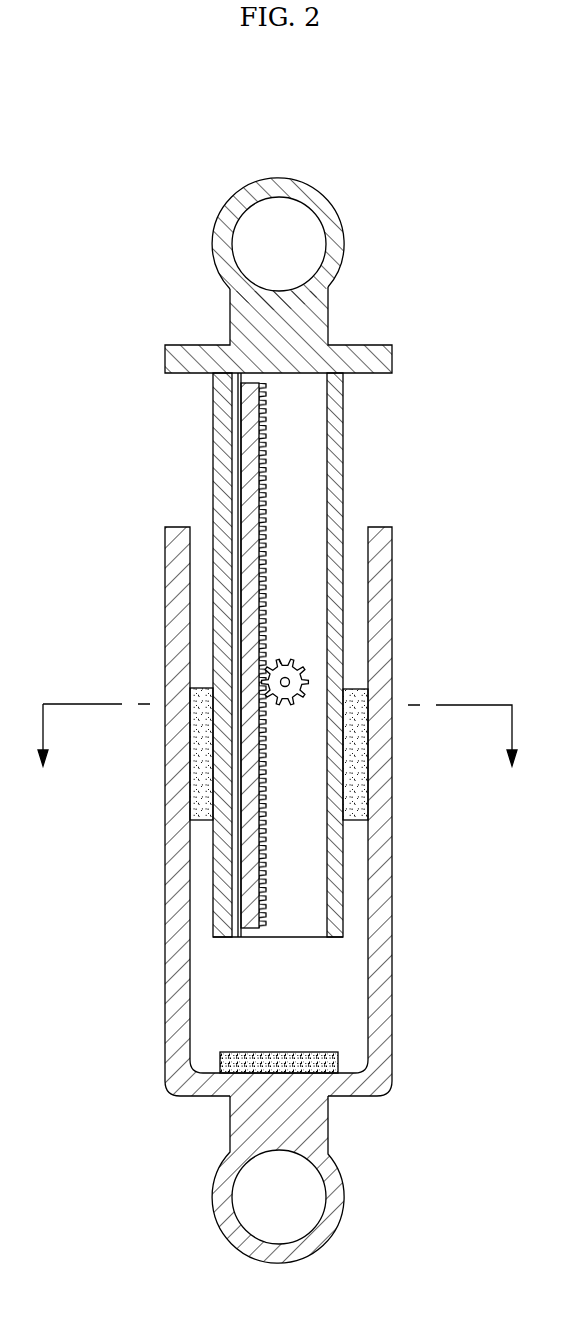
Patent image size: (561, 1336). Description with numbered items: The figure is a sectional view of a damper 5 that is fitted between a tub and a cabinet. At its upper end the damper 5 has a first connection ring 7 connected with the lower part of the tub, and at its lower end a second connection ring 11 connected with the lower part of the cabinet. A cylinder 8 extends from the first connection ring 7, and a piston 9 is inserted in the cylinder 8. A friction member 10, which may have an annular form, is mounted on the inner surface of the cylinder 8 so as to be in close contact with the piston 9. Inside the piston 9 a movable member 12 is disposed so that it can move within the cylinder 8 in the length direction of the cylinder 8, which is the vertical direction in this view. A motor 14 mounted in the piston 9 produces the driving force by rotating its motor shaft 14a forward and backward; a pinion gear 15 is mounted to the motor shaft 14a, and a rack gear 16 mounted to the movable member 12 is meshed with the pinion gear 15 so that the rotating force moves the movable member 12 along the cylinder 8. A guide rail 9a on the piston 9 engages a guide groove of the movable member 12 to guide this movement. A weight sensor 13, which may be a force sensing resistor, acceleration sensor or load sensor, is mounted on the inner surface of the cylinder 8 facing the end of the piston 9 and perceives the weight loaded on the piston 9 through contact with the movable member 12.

The damper 5 is at (428, 167).
The first connection ring 7 is at (337, 241).
The cylinder 8 is at (382, 574).
The piston 9 is at (343, 479).
The guide rail 9a is at (238, 648).
The friction member 10 is at (358, 760).
The second connection ring 11 is at (337, 1190).
The movable member 12 is at (258, 743).
The weight sensor 13 is at (222, 1053).
The motor 14 is at (308, 669).
The motor shaft 14a is at (292, 682).
The pinion gear 15 is at (279, 660).
The rack gear 16 is at (262, 832).